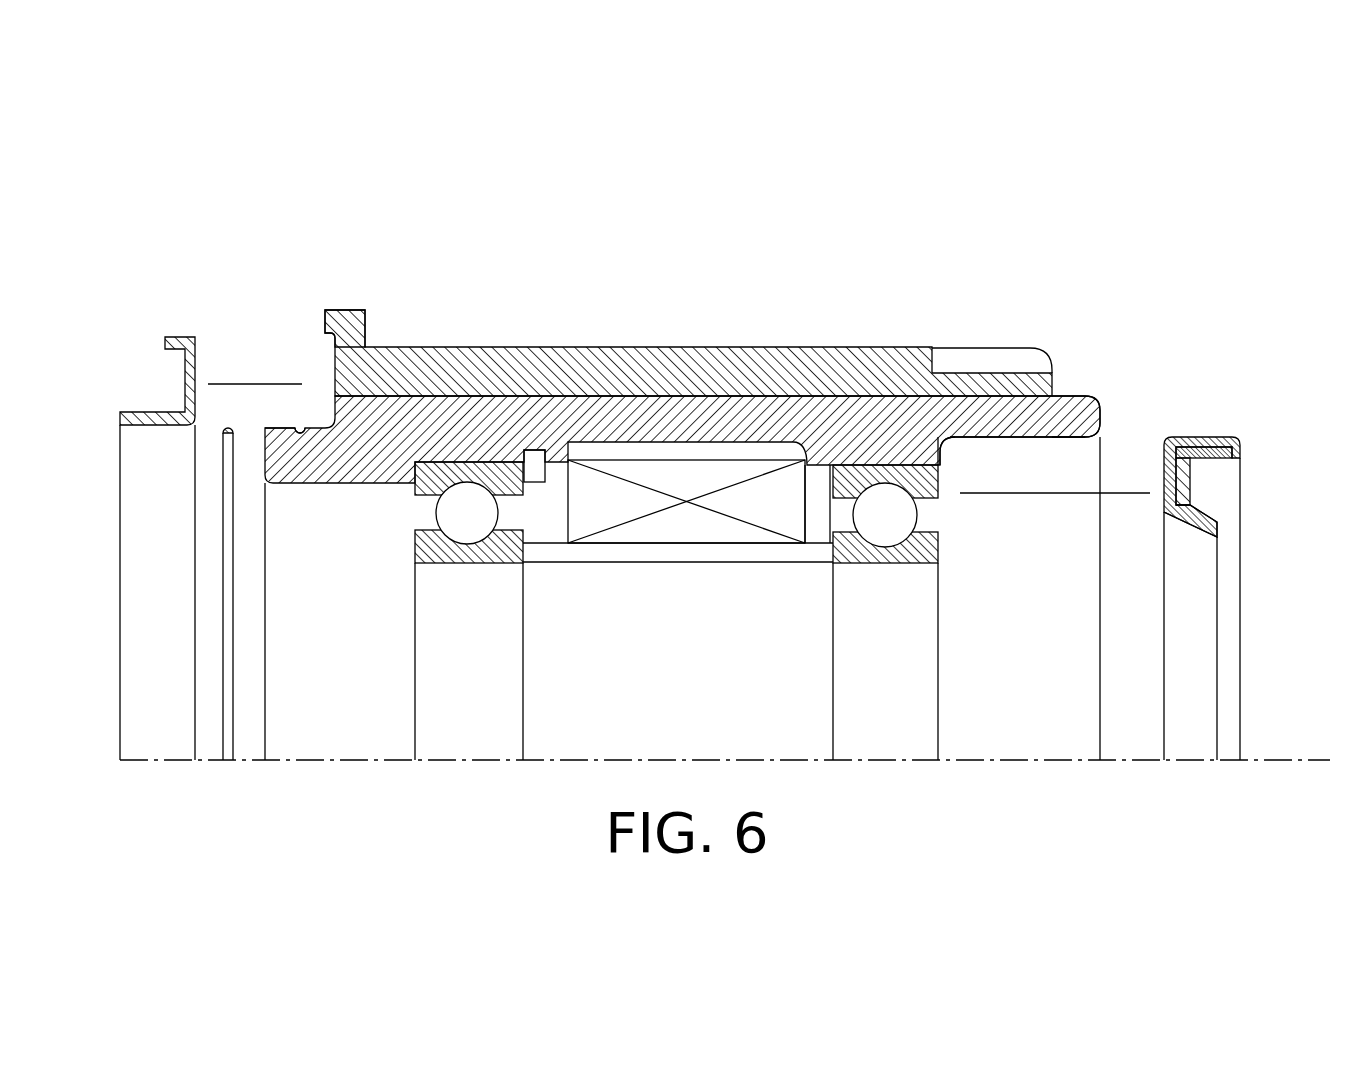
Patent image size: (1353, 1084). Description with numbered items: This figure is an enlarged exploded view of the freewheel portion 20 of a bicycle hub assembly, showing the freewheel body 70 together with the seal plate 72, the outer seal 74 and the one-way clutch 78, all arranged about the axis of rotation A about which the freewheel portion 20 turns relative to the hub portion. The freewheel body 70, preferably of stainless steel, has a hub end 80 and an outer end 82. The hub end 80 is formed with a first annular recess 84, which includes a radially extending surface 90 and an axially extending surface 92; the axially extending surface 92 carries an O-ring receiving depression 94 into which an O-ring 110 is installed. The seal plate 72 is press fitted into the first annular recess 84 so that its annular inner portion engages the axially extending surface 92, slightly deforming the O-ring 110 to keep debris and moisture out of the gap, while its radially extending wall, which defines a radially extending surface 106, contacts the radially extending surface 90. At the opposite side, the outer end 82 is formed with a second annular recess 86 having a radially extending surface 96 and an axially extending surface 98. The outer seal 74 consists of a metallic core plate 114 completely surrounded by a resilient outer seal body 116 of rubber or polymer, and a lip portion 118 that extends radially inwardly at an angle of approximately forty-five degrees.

The freewheel portion 20 is at (720, 270).
The freewheel body 70 is at (806, 347).
The seal plate 72 is at (175, 337).
The outer seal 74 is at (1251, 439).
The one-way clutch 78 is at (687, 517).
The hub end 80 is at (292, 463).
The outer end 82 is at (1089, 397).
The first annular recess 84 is at (238, 401).
The second annular recess 86 is at (1038, 475).
The radially extending surface 90 is at (240, 357).
The axially extending surface 92 is at (281, 436).
The O-ring receiving depression 94 is at (300, 428).
The radially extending surface 96 is at (940, 454).
The axially extending surface 98 is at (1015, 437).
The radially extending surface 106 is at (137, 483).
The O-ring 110 is at (222, 518).
The core plate 114 is at (1234, 440).
The outer seal body 116 is at (1240, 460).
The lip portion 118 is at (1210, 522).
The axis of rotation A is at (1006, 757).